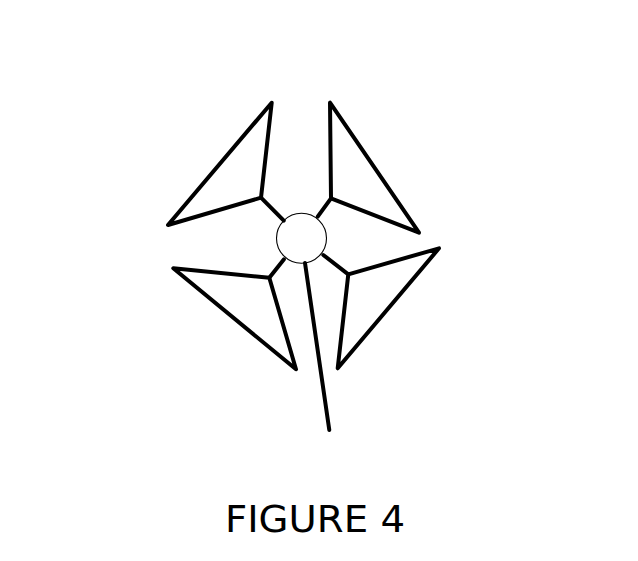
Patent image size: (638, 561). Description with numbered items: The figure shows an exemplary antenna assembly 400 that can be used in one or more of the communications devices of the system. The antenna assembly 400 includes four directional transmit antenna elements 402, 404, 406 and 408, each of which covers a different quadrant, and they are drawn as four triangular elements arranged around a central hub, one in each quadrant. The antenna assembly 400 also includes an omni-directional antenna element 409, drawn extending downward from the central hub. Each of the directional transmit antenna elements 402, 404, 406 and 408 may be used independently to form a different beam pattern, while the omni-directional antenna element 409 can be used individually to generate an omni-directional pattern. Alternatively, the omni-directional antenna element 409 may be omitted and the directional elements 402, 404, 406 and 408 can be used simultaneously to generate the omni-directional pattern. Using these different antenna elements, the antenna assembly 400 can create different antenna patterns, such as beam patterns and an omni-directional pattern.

The antenna assembly 400 is at (121, 57).
The directional transmit antenna element 402 is at (412, 219).
The directional transmit antenna element 404 is at (241, 135).
The directional transmit antenna element 406 is at (188, 282).
The directional transmit antenna element 408 is at (385, 318).
The omni-directional antenna element 409 is at (333, 359).